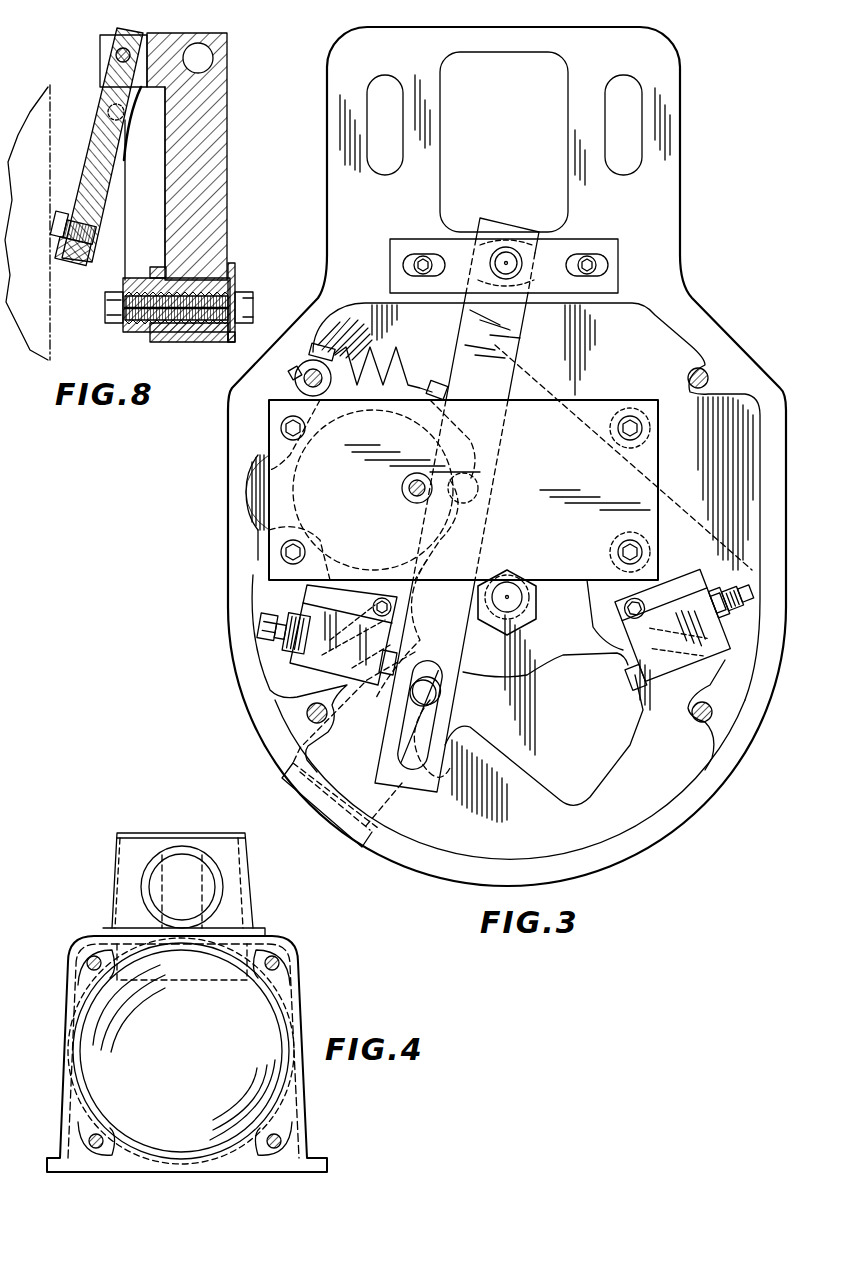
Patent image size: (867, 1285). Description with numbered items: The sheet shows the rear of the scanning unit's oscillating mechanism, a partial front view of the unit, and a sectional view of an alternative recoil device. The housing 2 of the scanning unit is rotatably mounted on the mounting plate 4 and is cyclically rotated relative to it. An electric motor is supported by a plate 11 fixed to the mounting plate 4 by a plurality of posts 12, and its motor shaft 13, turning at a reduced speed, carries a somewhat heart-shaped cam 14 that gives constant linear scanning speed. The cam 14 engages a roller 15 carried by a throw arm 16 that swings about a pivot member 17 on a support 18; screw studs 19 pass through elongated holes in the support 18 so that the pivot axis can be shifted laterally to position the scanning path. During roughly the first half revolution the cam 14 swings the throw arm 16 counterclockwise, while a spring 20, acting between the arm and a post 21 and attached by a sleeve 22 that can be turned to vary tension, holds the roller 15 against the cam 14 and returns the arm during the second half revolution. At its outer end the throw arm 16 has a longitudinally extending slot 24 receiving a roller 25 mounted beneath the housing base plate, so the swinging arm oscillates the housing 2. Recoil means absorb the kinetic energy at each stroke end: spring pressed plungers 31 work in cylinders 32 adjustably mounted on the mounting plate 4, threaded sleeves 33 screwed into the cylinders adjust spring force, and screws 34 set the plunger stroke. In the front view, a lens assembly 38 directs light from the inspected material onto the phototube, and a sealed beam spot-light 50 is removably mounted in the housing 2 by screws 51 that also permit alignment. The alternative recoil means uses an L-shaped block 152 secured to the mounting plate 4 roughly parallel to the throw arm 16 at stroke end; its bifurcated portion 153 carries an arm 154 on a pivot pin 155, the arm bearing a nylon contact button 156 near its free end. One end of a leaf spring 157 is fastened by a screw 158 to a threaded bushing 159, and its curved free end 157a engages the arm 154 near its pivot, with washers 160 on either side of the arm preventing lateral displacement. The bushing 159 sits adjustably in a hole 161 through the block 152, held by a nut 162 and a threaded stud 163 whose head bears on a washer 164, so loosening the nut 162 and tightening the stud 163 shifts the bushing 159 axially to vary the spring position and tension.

In FIG. 4, the housing 2 is at (300, 998).
In FIG. 3, the mounting plate 4 is at (327, 232).
In FIG. 3, the plate 11 is at (660, 463).
In FIG. 3, the posts 12 is at (642, 430).
In FIG. 3, the motor shaft 13 is at (405, 494).
In FIG. 3, the cam 14 is at (270, 448).
In FIG. 3, the roller 15 is at (470, 473).
In FIG. 8, the throw arm 16 is at (52, 335).
In FIG. 3, the throw arm 16 is at (522, 340).
In FIG. 3, the pivot member 17 is at (512, 250).
In FIG. 3, the support 18 is at (590, 239).
In FIG. 3, the screw studs 19 is at (423, 256).
In FIG. 3, the spring 20 is at (382, 355).
In FIG. 3, the post 21 is at (296, 381).
In FIG. 3, the sleeve 22 is at (308, 360).
In FIG. 3, the slot 24 is at (440, 720).
In FIG. 3, the roller 25 is at (436, 694).
In FIG. 3, the plungers 31 is at (628, 665).
In FIG. 3, the cylinders 32 is at (712, 655).
In FIG. 3, the threaded sleeves 33 is at (298, 665).
In FIG. 3, the screws 34 is at (258, 636).
In FIG. 4, the lens assembly 38 is at (220, 866).
In FIG. 4, the spot-light 50 is at (282, 1080).
In FIG. 4, the screws 51 is at (280, 963).
In FIG. 8, the block 152 is at (228, 138).
In FIG. 8, the bifurcated portion 153 is at (107, 35).
In FIG. 8, the arm 154 is at (70, 266).
In FIG. 8, the pivot pin 155 is at (140, 32).
In FIG. 8, the contact button 156 is at (57, 215).
In FIG. 8, the leaf spring 157 is at (128, 212).
In FIG. 8, the free end 157a is at (128, 122).
In FIG. 8, the screw 158 is at (112, 323).
In FIG. 8, the bushing 159 is at (205, 333).
In FIG. 8, the washers 160 is at (124, 112).
In FIG. 8, the hole 161 is at (236, 282).
In FIG. 8, the nut 162 is at (148, 346).
In FIG. 8, the threaded stud 163 is at (258, 312).
In FIG. 8, the washer 164 is at (236, 340).